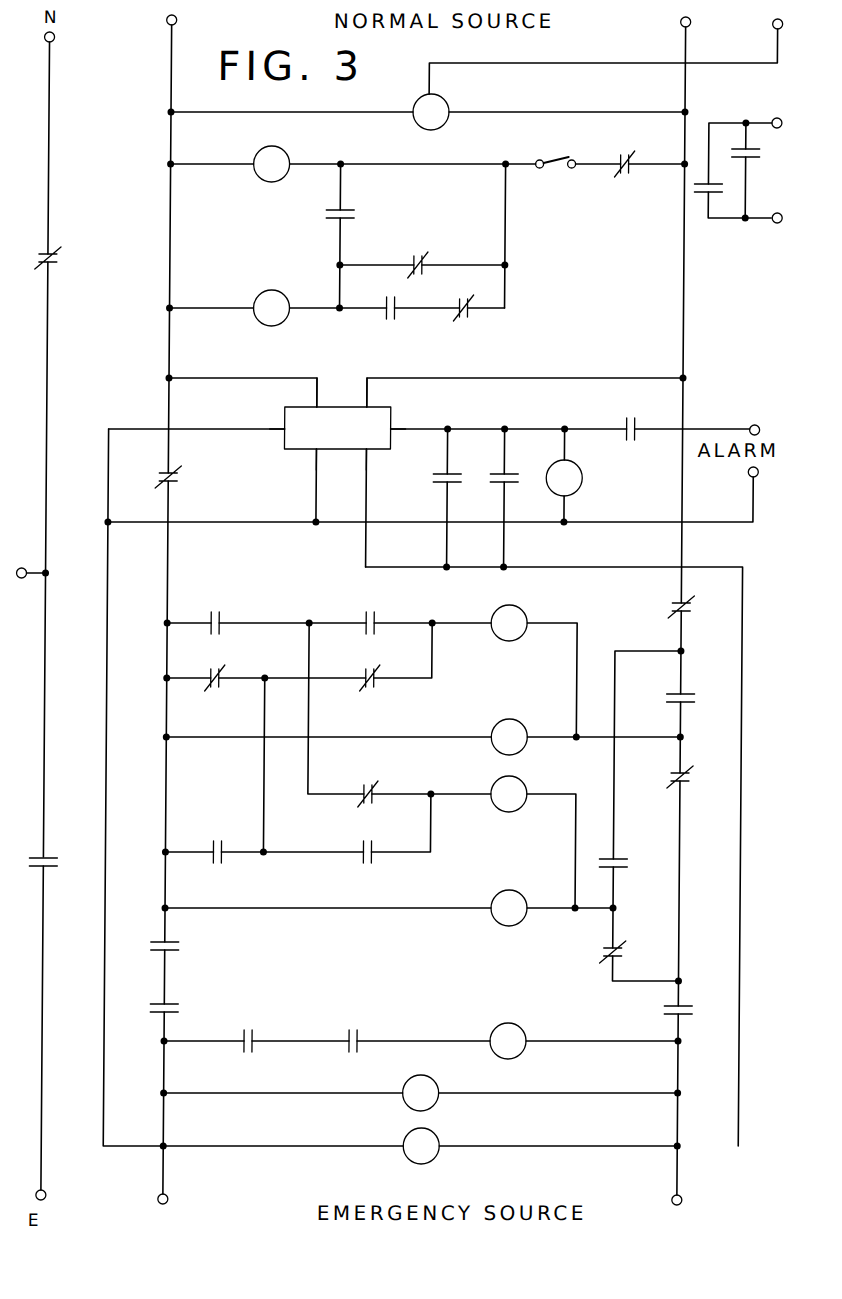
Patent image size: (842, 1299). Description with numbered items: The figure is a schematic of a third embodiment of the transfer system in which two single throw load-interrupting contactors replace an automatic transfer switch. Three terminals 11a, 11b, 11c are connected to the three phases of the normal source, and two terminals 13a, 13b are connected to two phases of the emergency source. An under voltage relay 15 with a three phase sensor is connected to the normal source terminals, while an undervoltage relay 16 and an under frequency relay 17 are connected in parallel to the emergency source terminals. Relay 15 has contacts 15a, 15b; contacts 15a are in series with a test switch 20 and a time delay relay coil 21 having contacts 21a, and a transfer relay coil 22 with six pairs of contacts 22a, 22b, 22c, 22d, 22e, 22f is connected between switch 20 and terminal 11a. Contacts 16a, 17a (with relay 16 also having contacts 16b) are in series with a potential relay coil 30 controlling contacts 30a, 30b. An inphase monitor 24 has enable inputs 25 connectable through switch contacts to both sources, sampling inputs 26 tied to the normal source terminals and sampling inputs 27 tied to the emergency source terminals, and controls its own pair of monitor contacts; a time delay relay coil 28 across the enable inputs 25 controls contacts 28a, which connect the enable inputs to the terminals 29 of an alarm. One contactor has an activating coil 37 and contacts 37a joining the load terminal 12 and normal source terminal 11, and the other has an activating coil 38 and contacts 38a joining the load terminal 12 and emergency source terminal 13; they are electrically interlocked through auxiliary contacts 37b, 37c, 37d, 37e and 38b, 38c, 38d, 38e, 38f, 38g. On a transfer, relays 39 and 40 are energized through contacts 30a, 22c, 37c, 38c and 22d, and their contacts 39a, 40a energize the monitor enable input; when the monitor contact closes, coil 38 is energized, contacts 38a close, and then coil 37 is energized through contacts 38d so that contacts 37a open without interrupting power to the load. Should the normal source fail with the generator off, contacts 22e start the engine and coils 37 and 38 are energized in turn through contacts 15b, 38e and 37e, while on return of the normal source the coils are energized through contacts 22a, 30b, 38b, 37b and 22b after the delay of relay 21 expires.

The normal source terminal 11 is at (56, 40).
The normal source terminal 11a is at (177, 20).
The normal source terminal 11b is at (680, 23).
The normal source terminal 11c is at (772, 27).
The load terminal 12 is at (28, 579).
The emergency source terminal 13 is at (56, 1196).
The emergency source terminal 13a is at (178, 1200).
The emergency source terminal 13b is at (692, 1201).
The under voltage relay 15 is at (449, 104).
The contacts 15a is at (627, 152).
The contacts 15b is at (222, 842).
The undervoltage relay 16 is at (442, 1088).
The contacts 16a is at (364, 1030).
The contacts 16b is at (467, 322).
The under frequency relay 17 is at (447, 1140).
The contacts 17a is at (256, 1030).
The test switch 20 is at (556, 159).
The time delay relay coil 21 is at (256, 176).
The contacts 21a is at (358, 220).
The transfer relay coil 22 is at (268, 291).
The contacts 22a is at (184, 470).
The contacts 22b is at (676, 608).
The contacts 22c is at (190, 950).
The contacts 22d is at (672, 1012).
The contacts 22e is at (704, 190).
The contacts 22f is at (425, 256).
The inphase monitor 24 is at (394, 400).
The enable inputs 25 is at (412, 452).
The sampling inputs 26 is at (369, 404).
The sampling inputs 27 is at (367, 452).
The time delay relay coil 28 is at (586, 478).
The contacts 28a is at (620, 424).
The alarm terminals 29 is at (765, 490).
The potential relay coil 30 is at (499, 1026).
The contacts 30a is at (198, 1002).
The contacts 30b is at (226, 692).
The activating coil 37 is at (524, 608).
The contacts 37a is at (68, 258).
The contacts 37b is at (672, 703).
The contacts 37c is at (678, 782).
The contacts 37d is at (376, 786).
The contacts 37e is at (378, 866).
The activating coil 38 is at (537, 782).
The contacts 38a is at (60, 858).
The contacts 38b is at (666, 888).
The contacts 38c is at (606, 948).
The contacts 38d is at (384, 618).
The contacts 38e is at (380, 690).
The contacts 38f is at (385, 320).
The contacts 38g is at (738, 148).
The relay 39 is at (505, 722).
The contacts 39a is at (440, 482).
The relay 40 is at (520, 892).
The contacts 40a is at (517, 478).